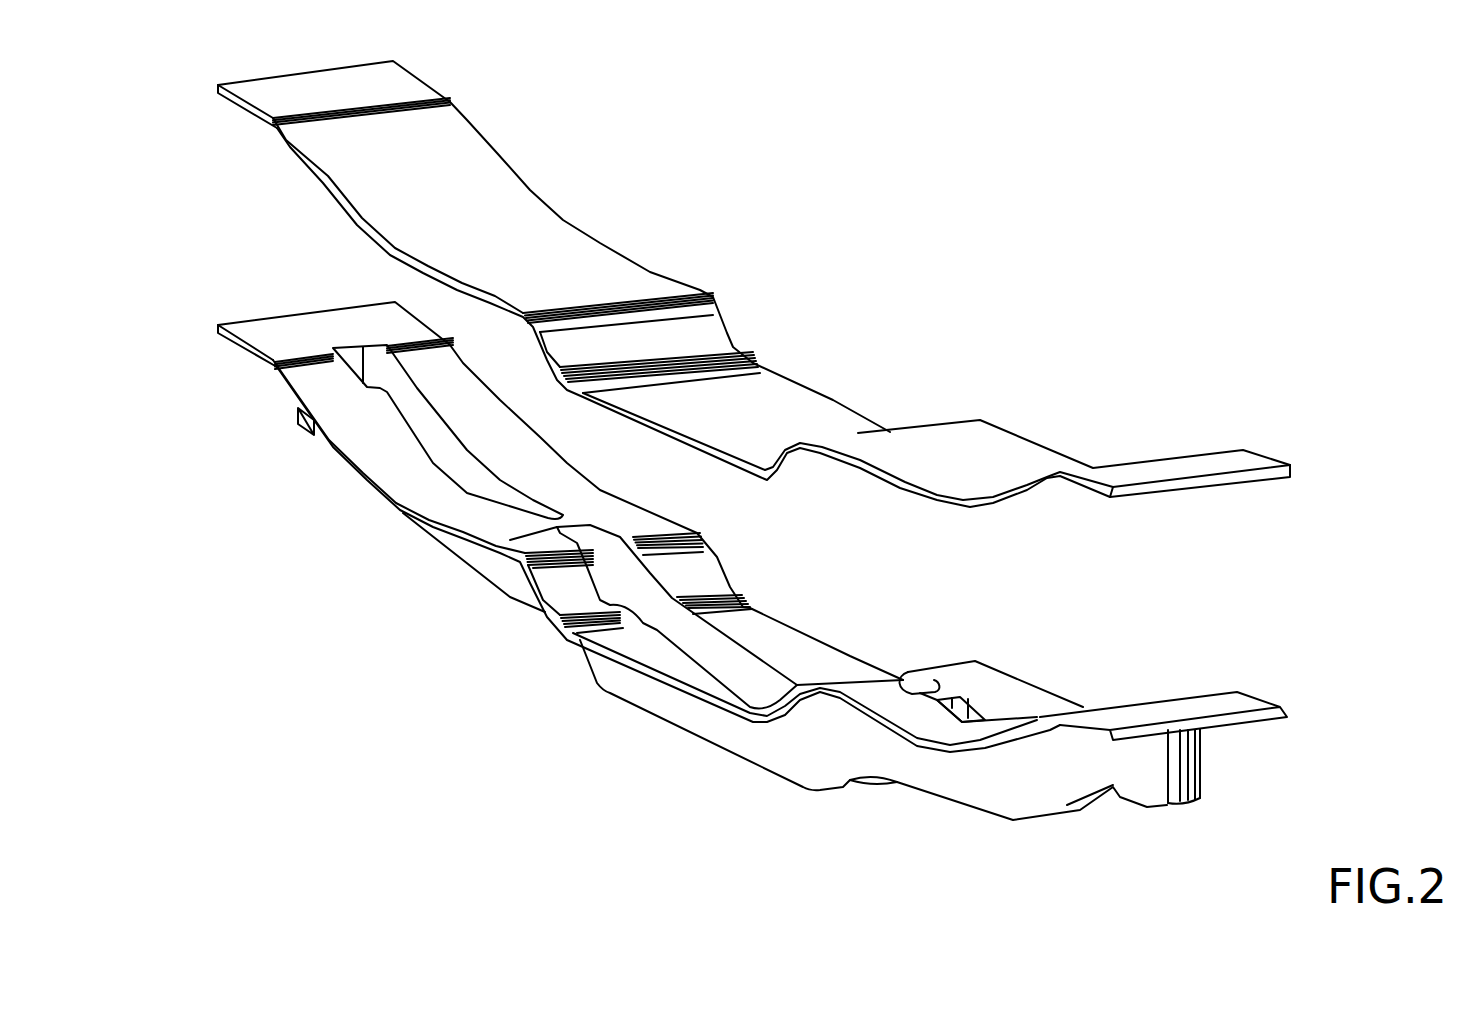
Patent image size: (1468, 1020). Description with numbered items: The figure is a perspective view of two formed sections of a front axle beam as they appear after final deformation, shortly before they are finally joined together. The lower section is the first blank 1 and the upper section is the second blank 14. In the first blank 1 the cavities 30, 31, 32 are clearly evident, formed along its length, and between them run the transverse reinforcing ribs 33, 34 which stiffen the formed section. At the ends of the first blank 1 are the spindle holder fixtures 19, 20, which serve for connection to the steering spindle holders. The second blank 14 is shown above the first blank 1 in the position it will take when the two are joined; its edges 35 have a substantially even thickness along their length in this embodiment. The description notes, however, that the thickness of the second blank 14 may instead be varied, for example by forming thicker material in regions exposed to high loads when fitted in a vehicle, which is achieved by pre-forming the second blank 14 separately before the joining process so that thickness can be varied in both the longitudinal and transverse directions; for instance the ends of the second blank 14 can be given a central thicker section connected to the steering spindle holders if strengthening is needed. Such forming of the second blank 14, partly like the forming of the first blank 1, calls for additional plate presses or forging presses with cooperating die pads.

The first blank 1 is at (747, 582).
The second blank 14 is at (687, 277).
The spindle holder fixture 19 is at (300, 420).
The spindle holder fixture 20 is at (1200, 770).
The cavity 30 is at (425, 430).
The cavity 31 is at (693, 635).
The cavity 32 is at (983, 718).
The transverse reinforcing rib 33 is at (555, 520).
The transverse reinforcing rib 34 is at (927, 700).
The edges 35 is at (253, 113).